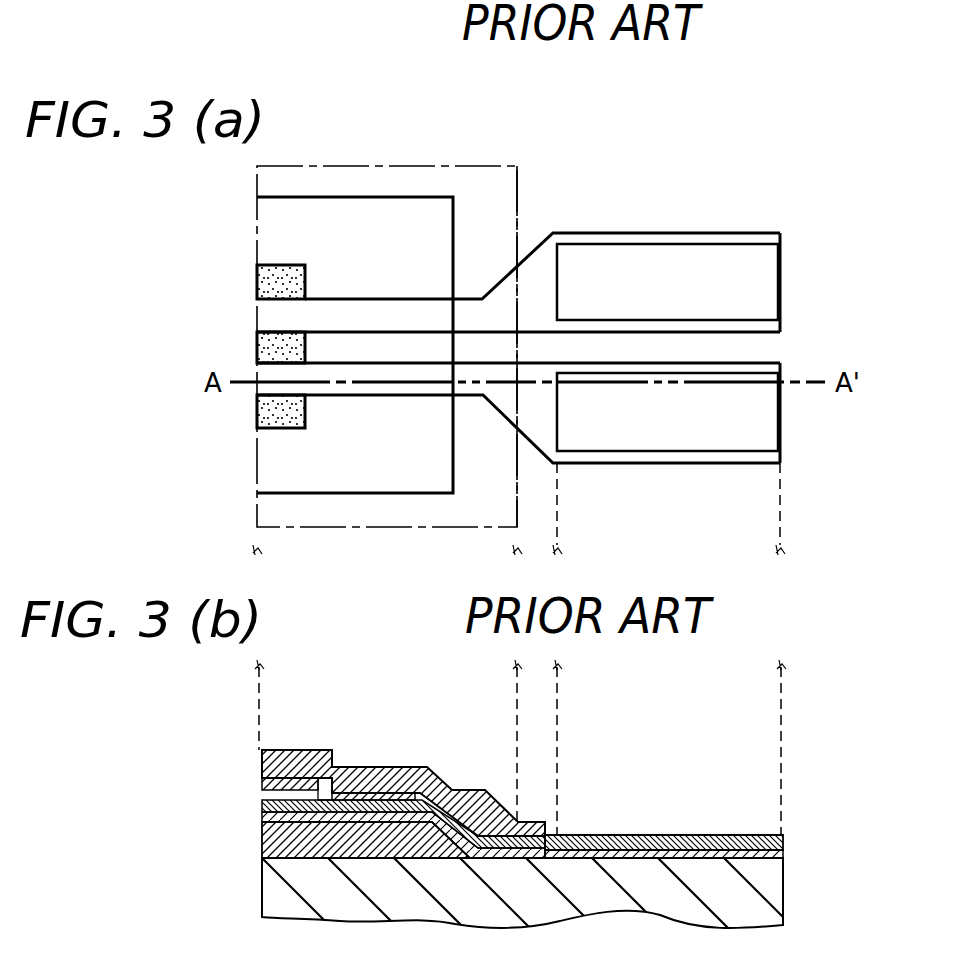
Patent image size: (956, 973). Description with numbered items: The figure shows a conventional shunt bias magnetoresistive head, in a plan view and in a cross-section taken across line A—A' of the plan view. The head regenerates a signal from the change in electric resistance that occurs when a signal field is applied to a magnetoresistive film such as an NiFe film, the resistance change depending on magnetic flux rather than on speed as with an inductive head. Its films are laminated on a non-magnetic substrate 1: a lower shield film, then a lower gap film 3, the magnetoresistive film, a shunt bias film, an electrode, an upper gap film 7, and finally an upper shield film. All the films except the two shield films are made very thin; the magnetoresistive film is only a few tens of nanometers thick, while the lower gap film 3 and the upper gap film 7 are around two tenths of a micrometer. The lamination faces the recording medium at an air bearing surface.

The non-magnetic substrate 1 is at (786, 900).
The lower gap film 3 is at (786, 856).
The upper gap film 7 is at (262, 783).